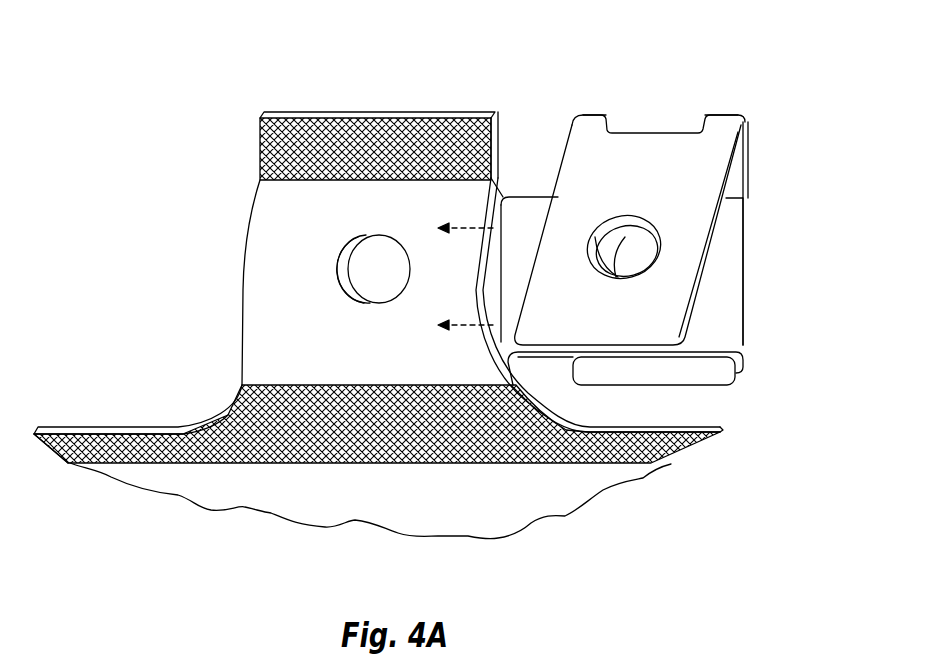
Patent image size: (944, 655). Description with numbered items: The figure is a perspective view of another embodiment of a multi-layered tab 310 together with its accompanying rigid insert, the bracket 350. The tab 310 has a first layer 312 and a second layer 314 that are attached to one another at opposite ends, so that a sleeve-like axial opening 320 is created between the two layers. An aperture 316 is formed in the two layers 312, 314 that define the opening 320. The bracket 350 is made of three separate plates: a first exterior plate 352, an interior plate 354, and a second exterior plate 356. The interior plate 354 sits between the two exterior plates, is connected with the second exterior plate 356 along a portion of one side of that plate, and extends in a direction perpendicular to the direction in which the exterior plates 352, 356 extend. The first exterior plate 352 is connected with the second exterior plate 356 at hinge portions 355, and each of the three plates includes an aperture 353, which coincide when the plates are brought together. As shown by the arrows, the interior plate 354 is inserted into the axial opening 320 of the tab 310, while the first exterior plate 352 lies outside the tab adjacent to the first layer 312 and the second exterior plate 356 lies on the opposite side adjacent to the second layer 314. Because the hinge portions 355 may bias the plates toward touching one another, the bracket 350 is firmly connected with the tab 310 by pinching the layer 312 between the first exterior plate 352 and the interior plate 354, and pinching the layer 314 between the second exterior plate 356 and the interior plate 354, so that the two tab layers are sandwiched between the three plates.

The tab 310 is at (495, 88).
The first layer 312 is at (267, 330).
The second layer 314 is at (504, 191).
The aperture 316 is at (365, 272).
The axial opening 320 is at (488, 287).
The bracket 350 is at (770, 142).
The first exterior plate 352 is at (690, 228).
The aperture 353 is at (634, 222).
The interior plate 354 is at (728, 330).
The hinge portions 355 is at (597, 120).
The second exterior plate 356 is at (693, 375).